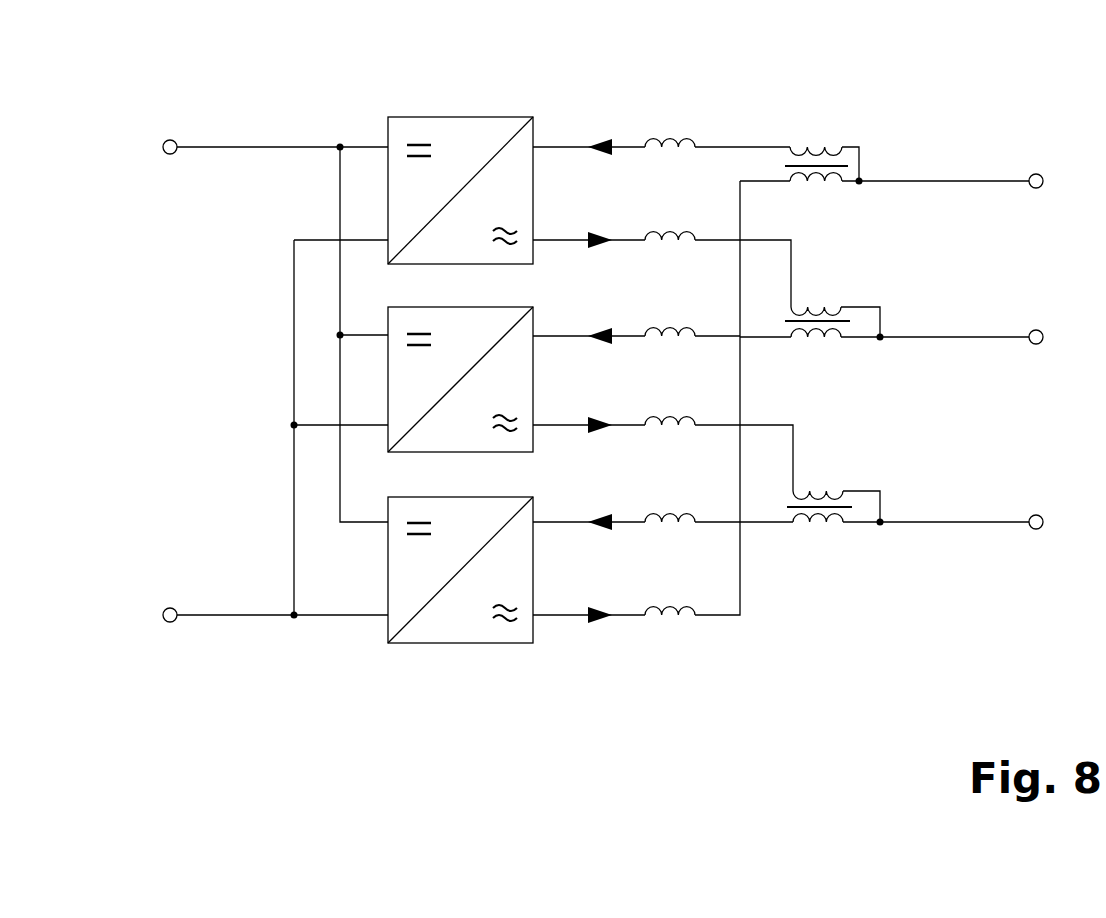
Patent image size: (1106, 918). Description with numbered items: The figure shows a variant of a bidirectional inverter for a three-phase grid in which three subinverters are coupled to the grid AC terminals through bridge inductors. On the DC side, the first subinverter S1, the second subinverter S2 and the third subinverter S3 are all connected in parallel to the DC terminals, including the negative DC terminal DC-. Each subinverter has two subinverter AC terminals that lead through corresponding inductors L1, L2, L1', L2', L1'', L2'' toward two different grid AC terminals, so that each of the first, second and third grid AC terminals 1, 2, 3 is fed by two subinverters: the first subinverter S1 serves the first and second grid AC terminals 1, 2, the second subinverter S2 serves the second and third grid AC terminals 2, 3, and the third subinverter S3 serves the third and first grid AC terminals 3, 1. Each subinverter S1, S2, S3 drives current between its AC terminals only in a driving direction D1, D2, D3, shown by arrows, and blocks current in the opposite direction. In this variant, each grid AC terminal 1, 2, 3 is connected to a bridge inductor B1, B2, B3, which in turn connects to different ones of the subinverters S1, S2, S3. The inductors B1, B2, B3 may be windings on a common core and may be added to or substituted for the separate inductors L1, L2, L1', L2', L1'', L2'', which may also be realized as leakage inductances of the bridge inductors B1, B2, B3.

The negative DC terminal DC- is at (128, 616).
The first subinverter S1 is at (535, 130).
The second subinverter S2 is at (535, 322).
The third subinverter S3 is at (535, 512).
The driving direction of first subinverter D1 is at (598, 234).
The driving direction of second subinverter D2 is at (607, 429).
The driving direction of third subinverter D3 is at (607, 619).
The inductor L1 is at (670, 124).
The inductor L2 is at (670, 217).
The inductor L1' is at (670, 318).
The inductor L2' is at (670, 400).
The inductor L1'' is at (671, 501).
The inductor L2'' is at (671, 590).
The bridge inductor B1 is at (816, 150).
The bridge inductor B2 is at (817, 304).
The bridge inductor B3 is at (819, 490).
The first grid AC terminal 1 is at (1050, 183).
The second grid AC terminal 2 is at (1050, 340).
The third grid AC terminal 3 is at (1050, 525).